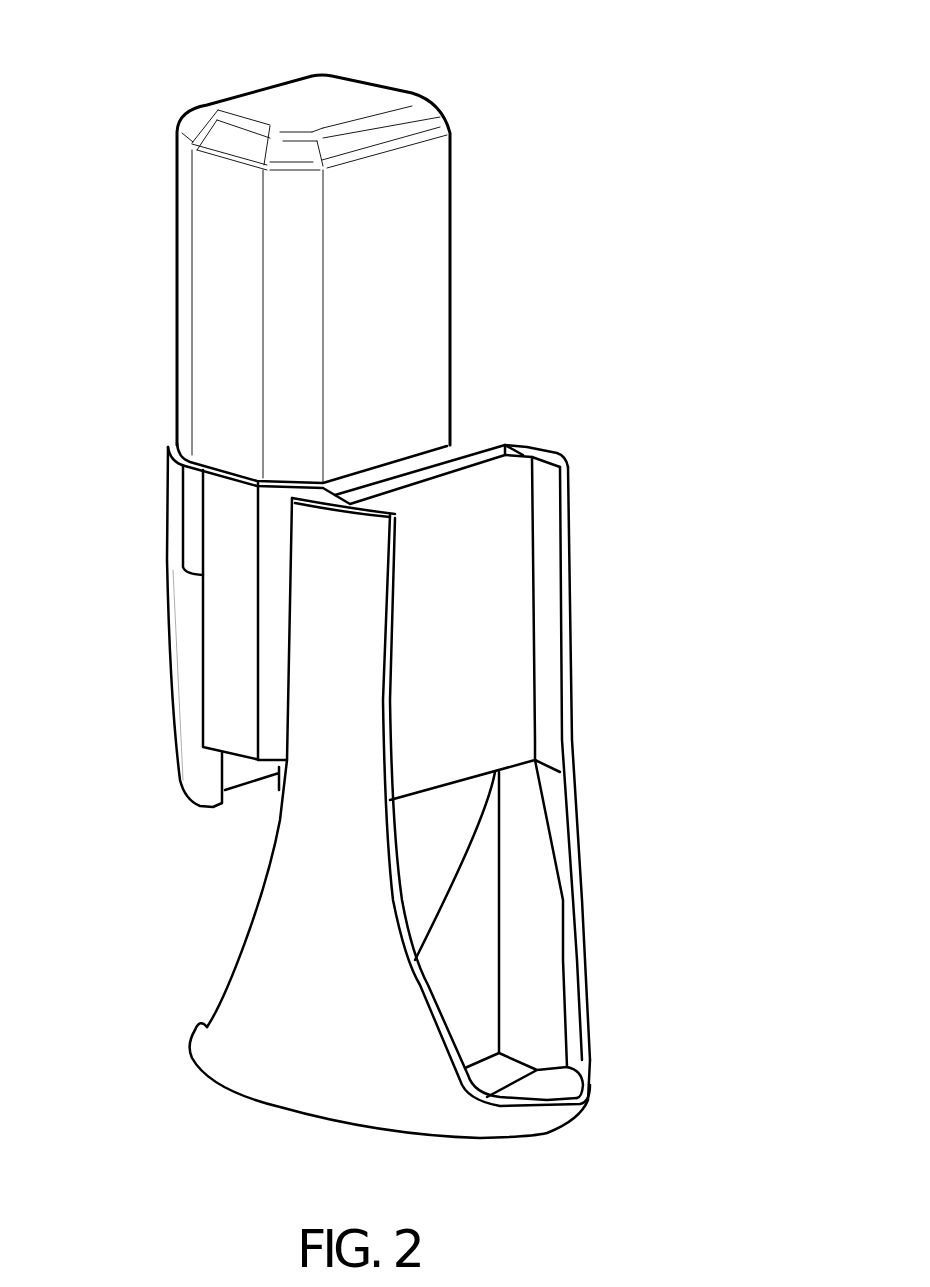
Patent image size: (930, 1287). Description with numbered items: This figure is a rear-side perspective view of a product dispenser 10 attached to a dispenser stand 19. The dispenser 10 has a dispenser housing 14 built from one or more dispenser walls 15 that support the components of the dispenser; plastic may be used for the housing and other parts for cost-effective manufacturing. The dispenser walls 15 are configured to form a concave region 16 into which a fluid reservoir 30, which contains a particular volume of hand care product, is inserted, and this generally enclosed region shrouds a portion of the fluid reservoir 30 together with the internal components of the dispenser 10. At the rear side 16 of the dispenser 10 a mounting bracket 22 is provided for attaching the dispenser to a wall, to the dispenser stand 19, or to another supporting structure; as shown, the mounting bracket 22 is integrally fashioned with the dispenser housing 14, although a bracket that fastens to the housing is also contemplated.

The product dispenser 10 is at (530, 87).
The fluid reservoir 30 is at (410, 222).
The rear side 16 is at (492, 382).
The mounting bracket 22 is at (450, 459).
The dispenser housing 14 is at (200, 517).
The dispenser walls 15 is at (193, 545).
The dispenser stand 19 is at (505, 655).